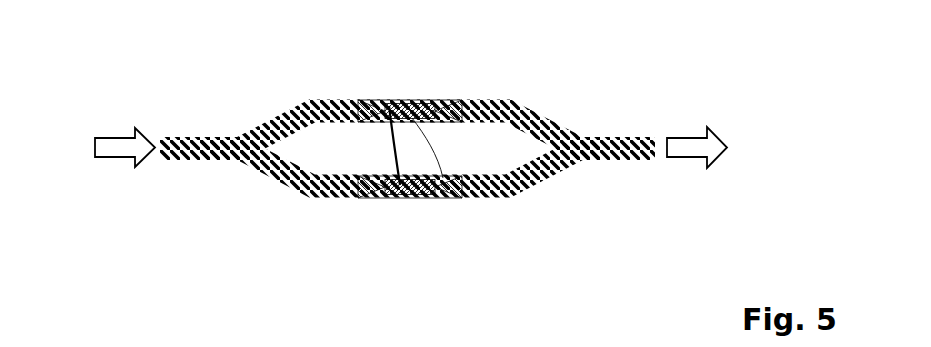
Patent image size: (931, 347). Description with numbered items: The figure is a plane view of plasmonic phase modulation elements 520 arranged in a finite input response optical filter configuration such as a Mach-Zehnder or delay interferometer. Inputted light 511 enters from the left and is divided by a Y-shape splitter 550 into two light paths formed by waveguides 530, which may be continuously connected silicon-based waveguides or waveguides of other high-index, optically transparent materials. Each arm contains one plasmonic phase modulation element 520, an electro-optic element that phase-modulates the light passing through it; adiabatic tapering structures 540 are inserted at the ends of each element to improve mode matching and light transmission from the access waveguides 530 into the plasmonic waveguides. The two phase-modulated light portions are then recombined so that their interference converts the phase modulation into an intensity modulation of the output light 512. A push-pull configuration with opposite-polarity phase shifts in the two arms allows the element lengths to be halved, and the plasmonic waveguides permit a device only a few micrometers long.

The inputted light 511 is at (127, 142).
The output light 512 is at (697, 140).
The plasmonic phase modulation element 520 is at (400, 185).
The waveguide 530 is at (225, 150).
The adiabatic tapering structure 540 is at (378, 177).
The Y-shape splitter 550 is at (565, 148).